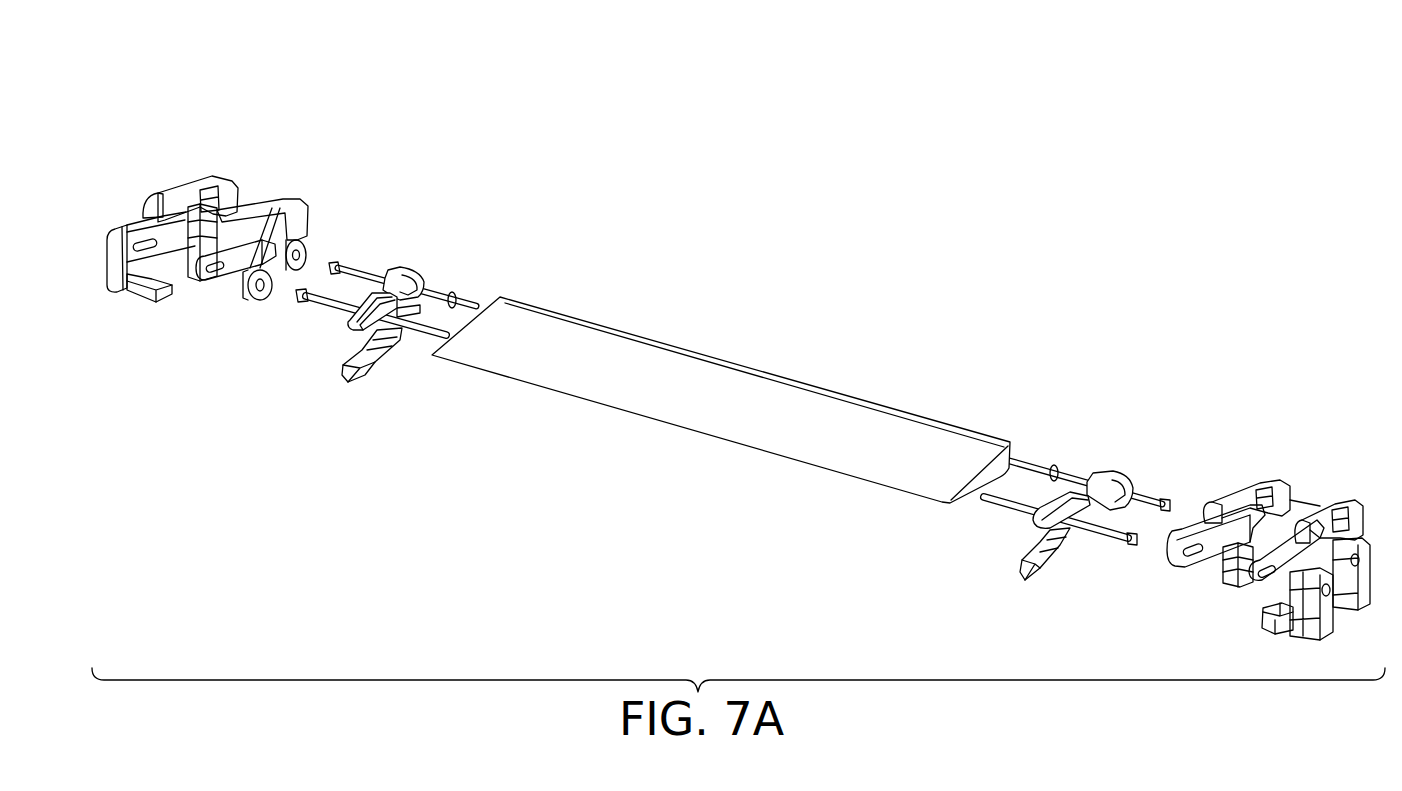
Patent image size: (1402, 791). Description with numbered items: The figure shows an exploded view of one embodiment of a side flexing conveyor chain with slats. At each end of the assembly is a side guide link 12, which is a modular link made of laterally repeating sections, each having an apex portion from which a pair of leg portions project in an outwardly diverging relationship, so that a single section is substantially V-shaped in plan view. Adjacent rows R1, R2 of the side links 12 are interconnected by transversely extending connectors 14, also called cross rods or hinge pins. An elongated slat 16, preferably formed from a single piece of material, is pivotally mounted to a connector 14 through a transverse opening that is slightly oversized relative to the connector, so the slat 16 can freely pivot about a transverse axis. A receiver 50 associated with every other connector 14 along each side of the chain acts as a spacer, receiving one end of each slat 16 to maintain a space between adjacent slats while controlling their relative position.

The side guide link 12 is at (722, 359).
The transversely extending connector 14 is at (1148, 472).
The elongated slat 16 is at (692, 367).
The receiver 50 is at (381, 368).
The first row of side links R1 is at (180, 150).
The second row of side links R2 is at (110, 225).